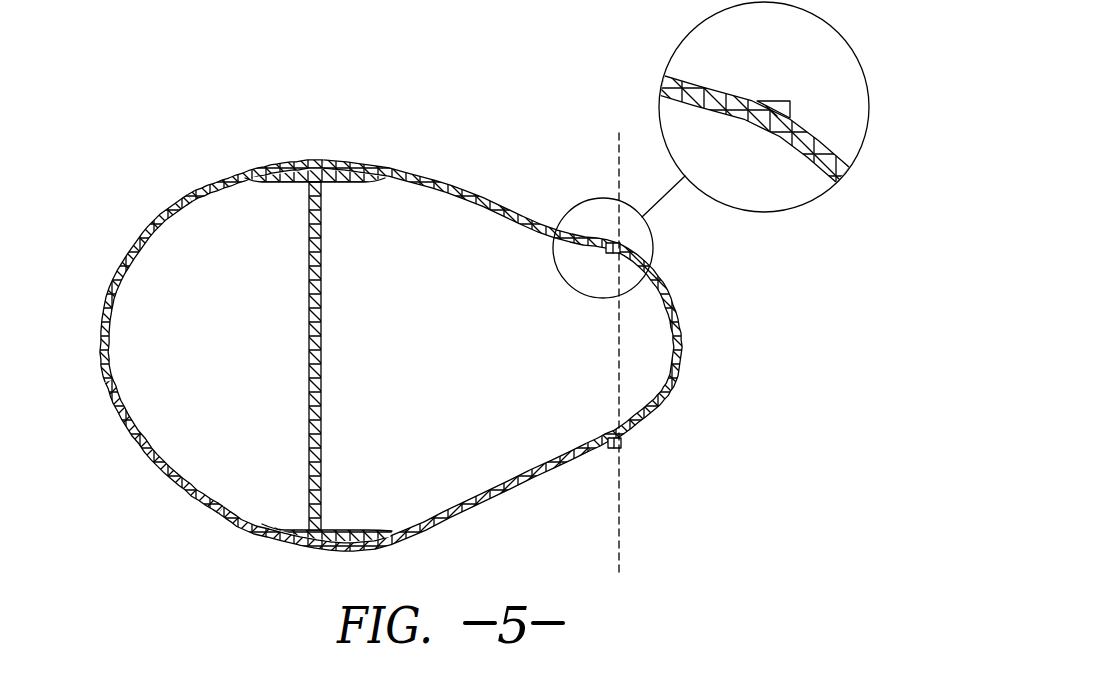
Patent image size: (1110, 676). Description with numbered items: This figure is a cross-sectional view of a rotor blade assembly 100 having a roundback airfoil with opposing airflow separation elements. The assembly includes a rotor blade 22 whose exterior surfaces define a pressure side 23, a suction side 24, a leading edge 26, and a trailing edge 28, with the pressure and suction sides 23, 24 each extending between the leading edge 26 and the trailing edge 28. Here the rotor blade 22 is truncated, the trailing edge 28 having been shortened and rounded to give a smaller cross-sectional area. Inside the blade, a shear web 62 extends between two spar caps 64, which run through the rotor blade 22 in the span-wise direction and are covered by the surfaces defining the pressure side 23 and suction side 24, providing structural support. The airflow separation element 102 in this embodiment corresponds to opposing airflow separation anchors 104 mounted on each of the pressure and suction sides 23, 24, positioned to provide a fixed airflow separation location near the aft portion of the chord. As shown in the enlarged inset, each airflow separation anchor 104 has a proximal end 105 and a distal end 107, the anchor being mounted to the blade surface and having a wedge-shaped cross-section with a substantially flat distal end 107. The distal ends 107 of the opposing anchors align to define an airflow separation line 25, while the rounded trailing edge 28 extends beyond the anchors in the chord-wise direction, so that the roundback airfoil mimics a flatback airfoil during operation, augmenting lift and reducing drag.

The rotor blade 22 is at (207, 185).
The pressure side 23 is at (467, 193).
The suction side 24 is at (462, 514).
The airflow separation line 25 is at (620, 522).
The leading edge 26 is at (100, 353).
The trailing edge 28 is at (684, 343).
The shear web 62 is at (347, 184).
The spar caps 64 is at (308, 360).
The rotor blade assembly 100 is at (707, 150).
The airflow separation element 102 is at (607, 230).
The airflow separation anchor 104 is at (622, 247).
The proximal end 105 is at (727, 98).
The distal end 107 is at (822, 93).